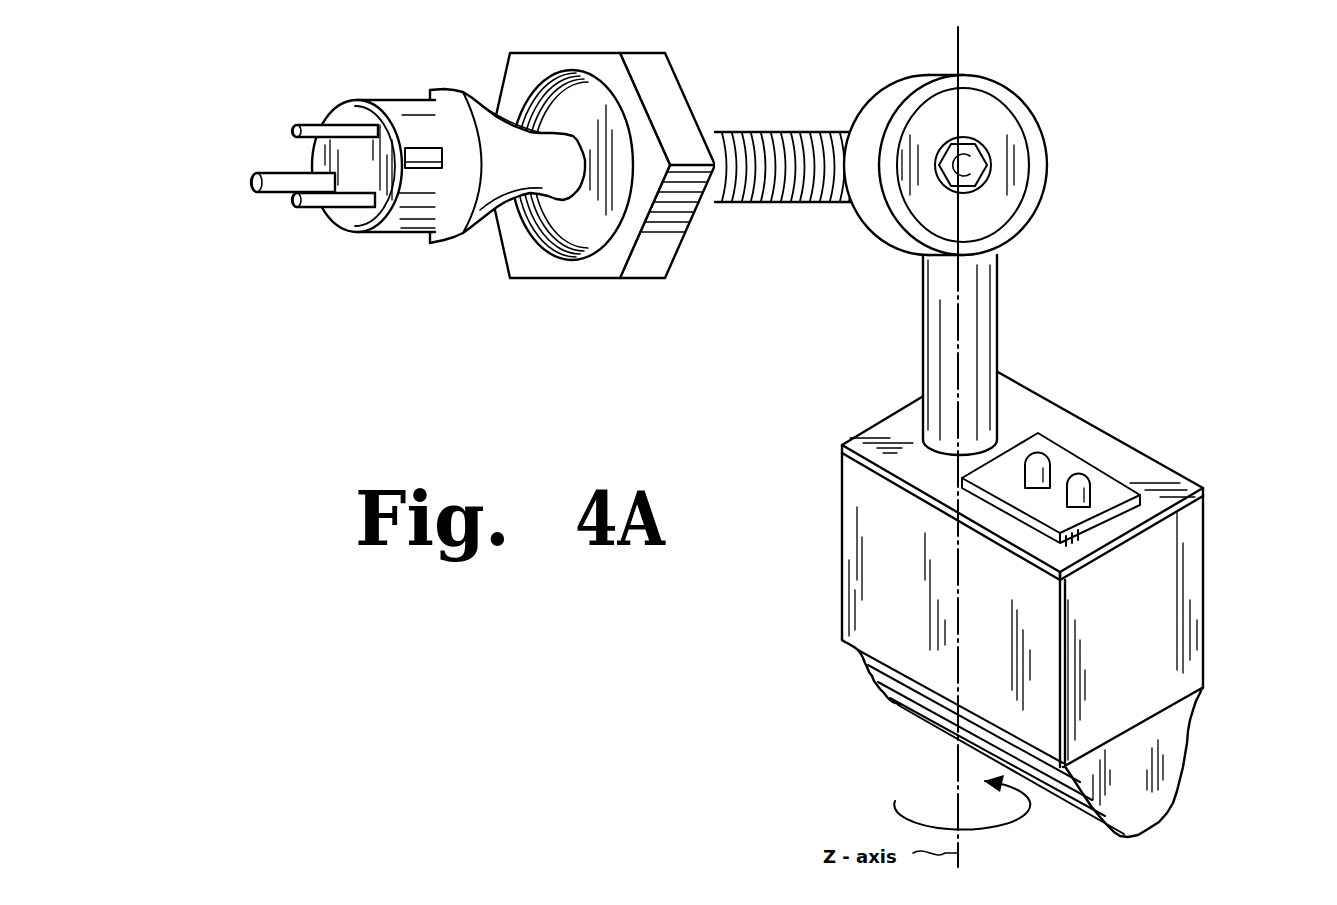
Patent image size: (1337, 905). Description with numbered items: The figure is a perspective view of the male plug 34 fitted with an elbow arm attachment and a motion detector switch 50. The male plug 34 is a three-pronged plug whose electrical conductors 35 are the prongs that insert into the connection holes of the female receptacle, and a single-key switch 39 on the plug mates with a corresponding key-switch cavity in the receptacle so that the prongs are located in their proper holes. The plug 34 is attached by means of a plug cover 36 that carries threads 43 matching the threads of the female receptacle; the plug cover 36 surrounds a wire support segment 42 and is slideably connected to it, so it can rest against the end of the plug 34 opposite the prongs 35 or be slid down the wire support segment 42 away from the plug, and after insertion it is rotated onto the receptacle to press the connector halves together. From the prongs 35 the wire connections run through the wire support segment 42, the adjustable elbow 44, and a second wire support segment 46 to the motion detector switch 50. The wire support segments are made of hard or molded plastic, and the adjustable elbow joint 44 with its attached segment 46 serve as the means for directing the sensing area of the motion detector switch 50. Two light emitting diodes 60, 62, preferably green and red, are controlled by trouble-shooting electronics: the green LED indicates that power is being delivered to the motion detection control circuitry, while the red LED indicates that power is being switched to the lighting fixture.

The male plug 34 is at (360, 232).
The electrical conductors 35 is at (317, 125).
The plug cover 36 is at (553, 279).
The single-key switch 39 is at (427, 148).
The wire support segment 42 is at (735, 131).
The threads 43 is at (565, 76).
The elbow 44 is at (1050, 152).
The wire support segment 46 is at (998, 313).
The motion detector switch 50 is at (1150, 622).
The light emitting diode 60 is at (1037, 455).
The light emitting diode 62 is at (1075, 474).